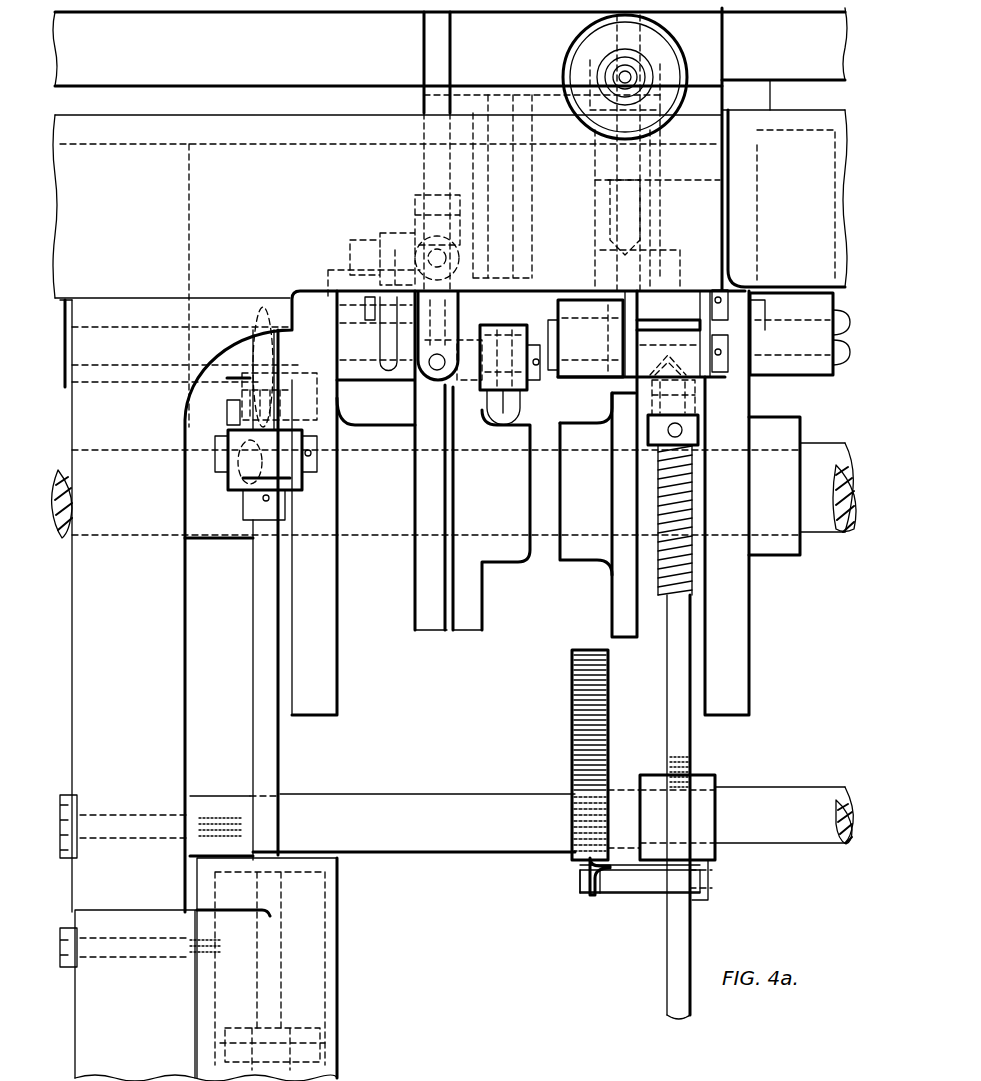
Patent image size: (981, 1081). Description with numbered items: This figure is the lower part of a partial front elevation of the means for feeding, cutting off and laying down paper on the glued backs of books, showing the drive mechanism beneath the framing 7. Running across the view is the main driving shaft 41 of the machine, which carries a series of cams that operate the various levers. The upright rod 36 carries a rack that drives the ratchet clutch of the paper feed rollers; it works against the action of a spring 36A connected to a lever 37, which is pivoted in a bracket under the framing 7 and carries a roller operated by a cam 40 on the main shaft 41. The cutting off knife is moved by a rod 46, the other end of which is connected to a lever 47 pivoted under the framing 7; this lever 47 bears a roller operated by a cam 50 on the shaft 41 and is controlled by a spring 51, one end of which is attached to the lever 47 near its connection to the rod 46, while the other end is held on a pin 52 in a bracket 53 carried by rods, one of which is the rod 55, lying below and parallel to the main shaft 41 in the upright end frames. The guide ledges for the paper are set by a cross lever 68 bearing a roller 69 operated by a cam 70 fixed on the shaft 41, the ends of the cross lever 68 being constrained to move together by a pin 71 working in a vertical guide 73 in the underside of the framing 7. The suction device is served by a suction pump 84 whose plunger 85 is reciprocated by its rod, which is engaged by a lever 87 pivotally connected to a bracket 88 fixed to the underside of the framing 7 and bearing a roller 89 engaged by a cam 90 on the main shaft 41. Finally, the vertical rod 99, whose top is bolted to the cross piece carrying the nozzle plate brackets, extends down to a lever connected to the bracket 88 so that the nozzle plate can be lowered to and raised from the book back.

The framing 7 is at (450, 217).
The vertical rod 99 is at (446, 52).
The upright rod 36 is at (675, 152).
The vertical guide 73 is at (522, 165).
The rod 46 is at (622, 206).
The pin 71 is at (505, 288).
The cam 90 is at (325, 645).
The roller 89 is at (305, 399).
The bracket 88 is at (247, 382).
The lever 87 is at (242, 470).
The roller 69 is at (460, 338).
The cross lever 68 is at (512, 354).
The cam 70 is at (467, 517).
The main driving shaft 41 is at (812, 460).
The cam 50 is at (612, 400).
The lever 47 is at (638, 333).
The lever 37 is at (800, 334).
The cam 40 is at (728, 385).
The spring 36A is at (752, 568).
The bracket 53 is at (680, 961).
The spring 51 is at (585, 750).
The pin 52 is at (617, 886).
The rod 55 is at (782, 825).
The suction pump 84 is at (328, 928).
The plunger 85 is at (308, 1048).